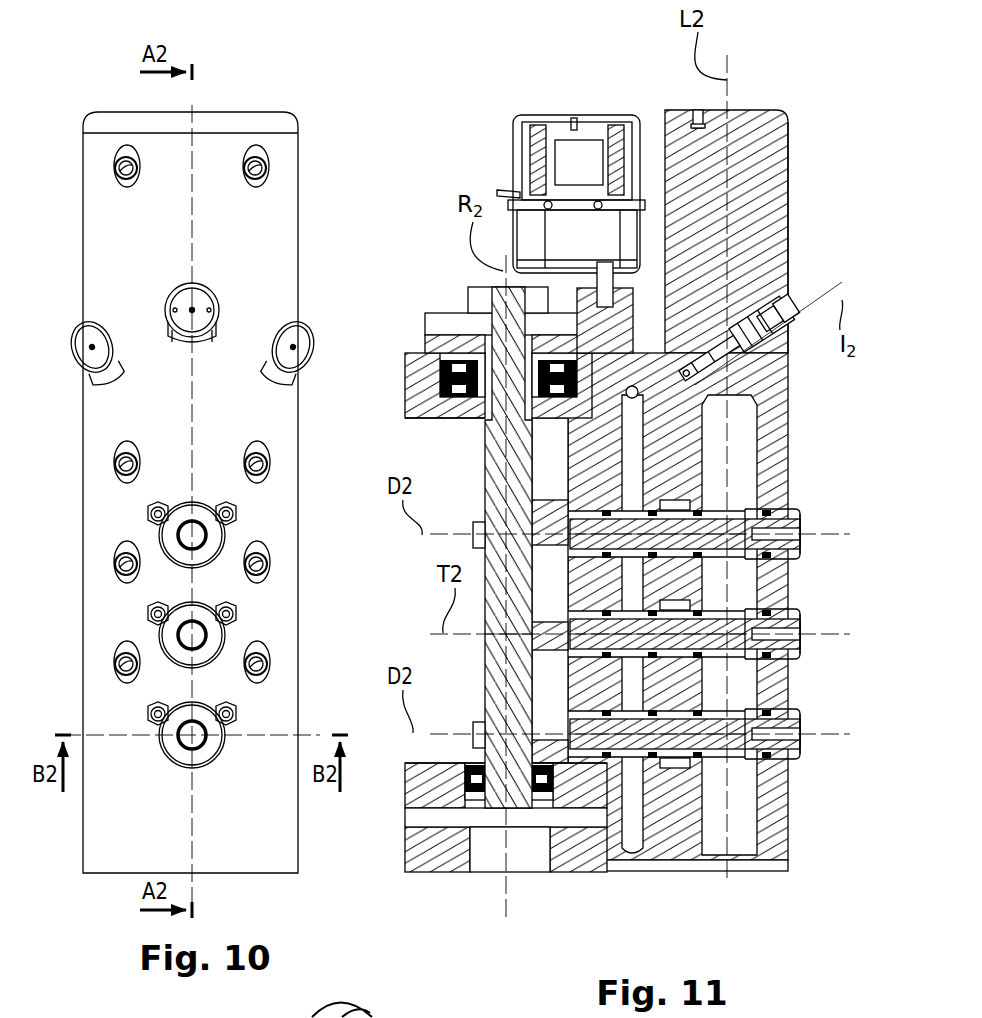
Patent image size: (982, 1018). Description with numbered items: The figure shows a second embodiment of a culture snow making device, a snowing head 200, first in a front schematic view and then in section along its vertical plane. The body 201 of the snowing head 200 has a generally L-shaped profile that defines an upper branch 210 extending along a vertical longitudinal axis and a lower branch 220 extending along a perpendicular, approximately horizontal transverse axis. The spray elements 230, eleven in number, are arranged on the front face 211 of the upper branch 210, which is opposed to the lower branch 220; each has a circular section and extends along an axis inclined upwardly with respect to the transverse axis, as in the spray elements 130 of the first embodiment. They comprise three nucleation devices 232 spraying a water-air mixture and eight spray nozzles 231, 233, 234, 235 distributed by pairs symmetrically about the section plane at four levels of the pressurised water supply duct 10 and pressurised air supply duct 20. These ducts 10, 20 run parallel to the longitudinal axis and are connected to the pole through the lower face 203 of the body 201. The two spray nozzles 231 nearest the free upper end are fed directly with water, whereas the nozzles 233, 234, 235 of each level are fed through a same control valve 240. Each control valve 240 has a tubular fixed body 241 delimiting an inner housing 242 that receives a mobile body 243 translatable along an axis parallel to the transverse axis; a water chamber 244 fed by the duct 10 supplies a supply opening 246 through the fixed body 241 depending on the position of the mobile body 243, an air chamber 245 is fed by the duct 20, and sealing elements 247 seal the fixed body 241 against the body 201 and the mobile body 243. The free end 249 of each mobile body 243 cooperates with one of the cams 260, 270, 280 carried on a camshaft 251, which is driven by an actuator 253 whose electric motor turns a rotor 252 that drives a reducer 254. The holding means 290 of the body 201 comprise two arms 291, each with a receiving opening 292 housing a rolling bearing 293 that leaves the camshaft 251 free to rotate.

In FIG. 11, the pressurised water supply duct 10 is at (760, 870).
In FIG. 11, the pressurised air supply duct 20 is at (618, 868).
In FIG. 11, the spray elements 130 is at (799, 299).
In FIG. 10, the snowing head 200 is at (128, 98).
In FIG. 11, the snowing head 200 is at (530, 100).
In FIG. 11, the body 201 is at (766, 108).
In FIG. 11, the lower face 203 is at (563, 872).
In FIG. 11, the upper branch 210 is at (788, 112).
In FIG. 11, the front face 211 is at (790, 148).
In FIG. 11, the lower branch 220 is at (582, 852).
In FIG. 10, the spray elements 230 is at (221, 157).
In FIG. 10, the spray nozzles 231 is at (130, 182).
In FIG. 10, the nucleation devices 232 is at (100, 335).
In FIG. 11, the nucleation devices 232 is at (797, 316).
In FIG. 10, the spray nozzles 233 is at (248, 452).
In FIG. 10, the spray nozzles 234 is at (120, 600).
In FIG. 10, the spray nozzles 235 is at (125, 698).
In FIG. 10, the control valve 240 is at (215, 537).
In FIG. 11, the control valve 240 is at (806, 540).
In FIG. 11, the fixed body 241 is at (812, 518).
In FIG. 11, the inner housing 242 is at (792, 550).
In FIG. 11, the mobile body 243 is at (673, 527).
In FIG. 11, the water chamber 244 is at (792, 505).
In FIG. 11, the air chamber 245 is at (667, 513).
In FIG. 11, the supply opening 246 is at (712, 512).
In FIG. 11, the sealing elements 247 is at (602, 615).
In FIG. 11, the free end 249 is at (565, 520).
In FIG. 11, the camshaft 251 is at (485, 452).
In FIG. 11, the rotor 252 is at (666, 236).
In FIG. 11, the actuator 253 is at (512, 175).
In FIG. 11, the reducer 254 is at (665, 303).
In FIG. 11, the cam 260 is at (462, 727).
In FIG. 11, the cam 270 is at (480, 637).
In FIG. 11, the cam 280 is at (473, 530).
In FIG. 11, the means for holding the piloting means 290 is at (404, 410).
In FIG. 11, the arms 291 is at (405, 378).
In FIG. 11, the receiving opening 292 is at (458, 405).
In FIG. 11, the rolling bearing 293 is at (448, 345).